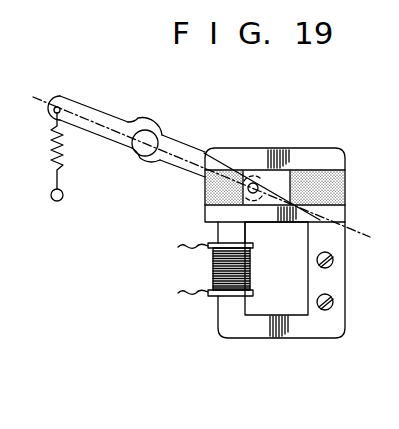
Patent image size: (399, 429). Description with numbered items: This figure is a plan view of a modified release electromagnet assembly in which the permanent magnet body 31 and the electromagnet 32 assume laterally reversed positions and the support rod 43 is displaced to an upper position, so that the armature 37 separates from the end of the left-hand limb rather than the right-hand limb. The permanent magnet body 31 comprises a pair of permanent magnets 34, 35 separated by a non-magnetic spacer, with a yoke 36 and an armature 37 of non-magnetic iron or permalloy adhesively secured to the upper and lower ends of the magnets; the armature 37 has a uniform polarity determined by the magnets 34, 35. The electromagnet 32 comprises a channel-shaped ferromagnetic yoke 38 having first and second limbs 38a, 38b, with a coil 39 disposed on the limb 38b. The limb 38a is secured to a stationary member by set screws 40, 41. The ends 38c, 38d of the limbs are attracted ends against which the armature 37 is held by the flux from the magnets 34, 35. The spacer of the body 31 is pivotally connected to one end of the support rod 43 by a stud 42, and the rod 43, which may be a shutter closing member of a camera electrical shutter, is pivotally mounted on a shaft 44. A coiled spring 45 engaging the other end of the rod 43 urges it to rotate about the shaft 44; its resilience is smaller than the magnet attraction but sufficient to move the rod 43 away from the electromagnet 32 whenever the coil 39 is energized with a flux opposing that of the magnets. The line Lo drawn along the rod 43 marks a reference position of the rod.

The low position line Lo is at (50, 96).
The permanent magnet body 31 is at (313, 137).
The electromagnet 32 is at (237, 346).
The permanent magnet 34 is at (340, 176).
The permanent magnet 35 is at (205, 193).
The yoke 36 is at (231, 156).
The armature 37 is at (258, 214).
The channel-shaped yoke 38 is at (268, 333).
The first limb 38a is at (240, 303).
The second limb 38b is at (342, 281).
The attracted end 38c is at (231, 228).
The attracted end 38d is at (320, 217).
The coil 39 is at (215, 273).
The set screw 40 is at (334, 259).
The set screw 41 is at (334, 303).
The stud 42 is at (256, 182).
The support rod 43 is at (118, 122).
The shaft 44 is at (147, 130).
The coiled spring 45 is at (63, 155).